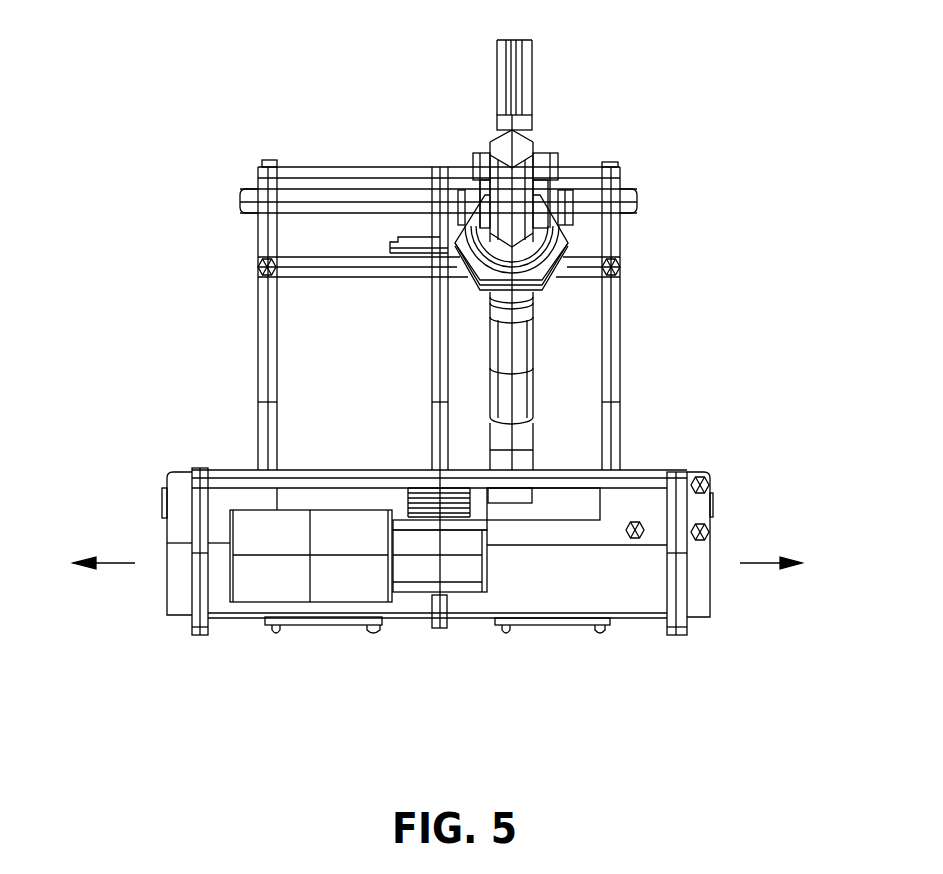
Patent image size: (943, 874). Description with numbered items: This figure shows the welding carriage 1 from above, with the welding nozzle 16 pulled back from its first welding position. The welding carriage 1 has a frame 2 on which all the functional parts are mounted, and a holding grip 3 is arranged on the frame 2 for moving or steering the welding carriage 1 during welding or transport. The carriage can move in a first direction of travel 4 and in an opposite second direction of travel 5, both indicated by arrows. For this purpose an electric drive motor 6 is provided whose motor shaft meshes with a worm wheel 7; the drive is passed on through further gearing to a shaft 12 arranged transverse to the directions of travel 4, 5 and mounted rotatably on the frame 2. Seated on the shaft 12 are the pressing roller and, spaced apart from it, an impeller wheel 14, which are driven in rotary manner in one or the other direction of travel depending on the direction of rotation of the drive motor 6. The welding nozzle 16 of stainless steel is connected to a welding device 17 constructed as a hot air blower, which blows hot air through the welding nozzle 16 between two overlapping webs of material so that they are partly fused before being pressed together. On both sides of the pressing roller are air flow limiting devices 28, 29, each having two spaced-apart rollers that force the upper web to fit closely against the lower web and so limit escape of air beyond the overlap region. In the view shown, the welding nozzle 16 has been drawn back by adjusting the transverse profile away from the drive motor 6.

The welding carriage 1 is at (720, 138).
The frame 2 is at (262, 370).
The holding grip 3 is at (636, 484).
The first direction of travel 4 is at (765, 563).
The second direction of travel 5 is at (115, 563).
The drive motor 6 is at (263, 582).
The worm wheel 7 is at (421, 565).
The shaft 12 is at (432, 430).
The impeller wheel 14 is at (403, 240).
The welding nozzle 16 is at (527, 462).
The welding device 17 is at (522, 343).
The air flow limiting device 28 is at (550, 622).
The air flow limiting device 29 is at (325, 622).